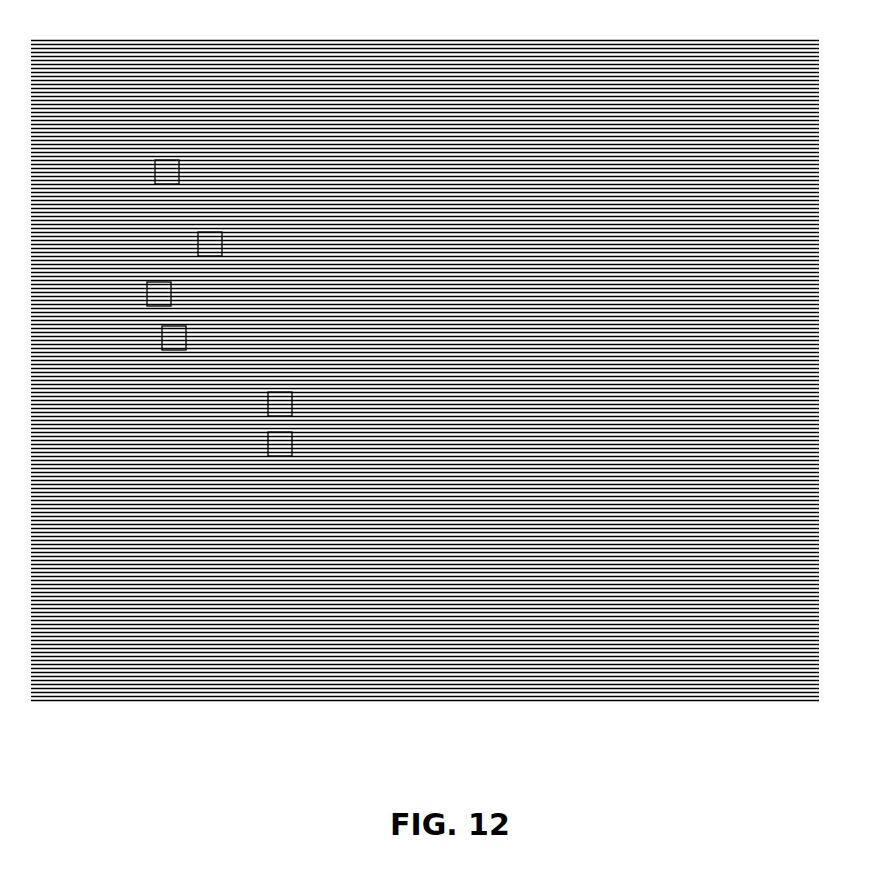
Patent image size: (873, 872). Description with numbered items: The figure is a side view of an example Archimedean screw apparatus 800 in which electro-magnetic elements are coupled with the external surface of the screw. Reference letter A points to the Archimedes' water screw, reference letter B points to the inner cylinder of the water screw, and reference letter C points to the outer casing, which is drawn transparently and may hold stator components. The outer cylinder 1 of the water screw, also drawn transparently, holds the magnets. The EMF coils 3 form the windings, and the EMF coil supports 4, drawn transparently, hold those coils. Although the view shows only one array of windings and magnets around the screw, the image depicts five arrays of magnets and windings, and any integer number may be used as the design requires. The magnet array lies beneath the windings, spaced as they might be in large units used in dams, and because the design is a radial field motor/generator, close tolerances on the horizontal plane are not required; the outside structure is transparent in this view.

The Archimedean screw apparatus 800 is at (210, 77).
The Archimedes' water screw A is at (206, 242).
The inner cylinder B is at (172, 334).
The outer casing C is at (160, 176).
The outer cylinder 1 is at (151, 298).
The EMF coils 3 is at (274, 404).
The EMF coil supports 4 is at (274, 444).